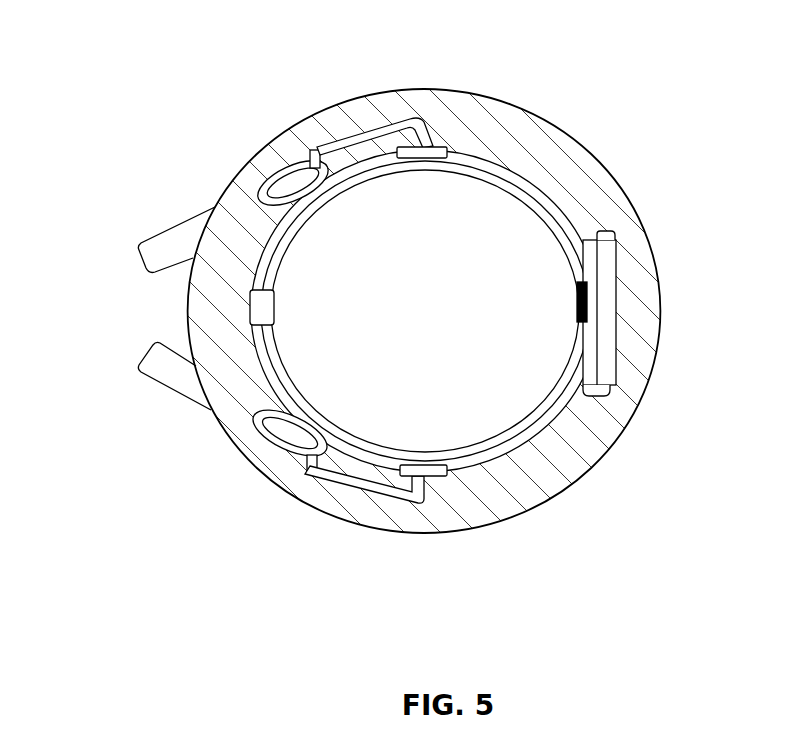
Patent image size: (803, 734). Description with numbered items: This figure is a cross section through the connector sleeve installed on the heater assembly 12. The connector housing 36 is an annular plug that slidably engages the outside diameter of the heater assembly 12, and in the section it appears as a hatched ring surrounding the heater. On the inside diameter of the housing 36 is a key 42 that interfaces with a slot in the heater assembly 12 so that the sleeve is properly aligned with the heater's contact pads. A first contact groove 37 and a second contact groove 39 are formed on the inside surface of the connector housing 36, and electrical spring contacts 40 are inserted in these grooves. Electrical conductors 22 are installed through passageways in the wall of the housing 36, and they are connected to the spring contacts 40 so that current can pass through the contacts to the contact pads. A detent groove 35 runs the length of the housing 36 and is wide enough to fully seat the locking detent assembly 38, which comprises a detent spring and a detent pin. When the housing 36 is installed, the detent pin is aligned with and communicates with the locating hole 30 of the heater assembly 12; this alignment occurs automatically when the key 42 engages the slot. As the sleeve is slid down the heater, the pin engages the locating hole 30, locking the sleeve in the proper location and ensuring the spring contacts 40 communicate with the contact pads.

The heater assembly 12 is at (487, 448).
The electrical conductors 22 is at (168, 363).
The locating hole 30 is at (578, 279).
The detent groove 35 is at (597, 238).
The connector housing 36 is at (650, 303).
The first contact groove 37 is at (347, 136).
The locking detent assembly 38 is at (582, 320).
The second contact groove 39 is at (358, 490).
The electrical spring contacts 40 is at (347, 471).
The key 42 is at (262, 306).